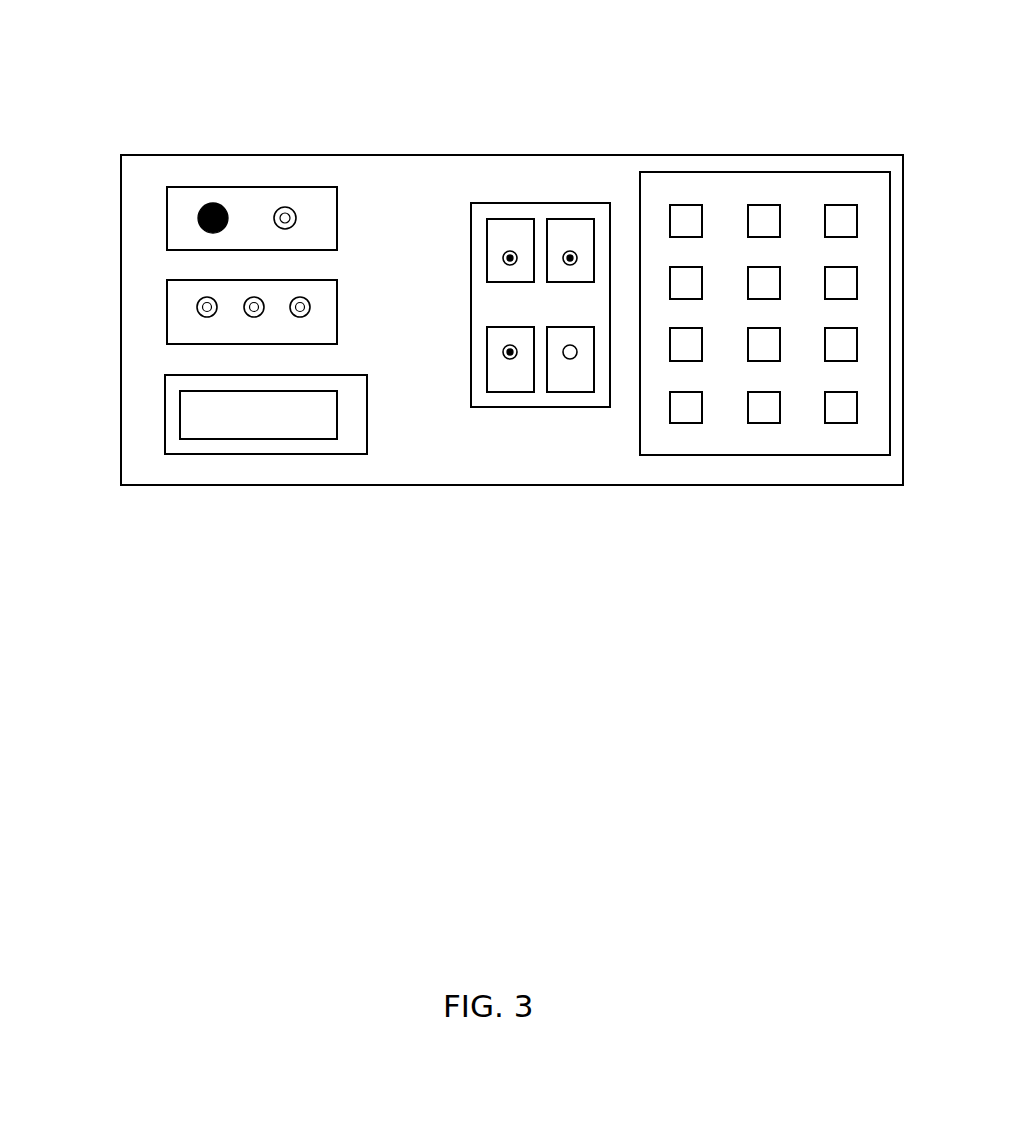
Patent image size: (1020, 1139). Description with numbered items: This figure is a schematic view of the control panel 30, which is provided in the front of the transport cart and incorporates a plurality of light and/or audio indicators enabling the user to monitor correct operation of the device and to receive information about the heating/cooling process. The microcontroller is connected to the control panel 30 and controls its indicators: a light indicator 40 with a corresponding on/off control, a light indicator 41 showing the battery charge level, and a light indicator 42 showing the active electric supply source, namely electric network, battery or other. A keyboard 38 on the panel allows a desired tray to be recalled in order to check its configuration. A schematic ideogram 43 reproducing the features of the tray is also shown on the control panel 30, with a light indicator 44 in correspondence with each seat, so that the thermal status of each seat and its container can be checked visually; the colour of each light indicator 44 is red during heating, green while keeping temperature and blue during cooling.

The control panel 30 is at (667, 155).
The keyboard 38 is at (795, 320).
The light indicator 40 is at (305, 185).
The light indicator 41 is at (165, 398).
The light indicator 42 is at (340, 288).
The schematic ideogram 43 is at (535, 310).
The light indicator 44 is at (578, 233).